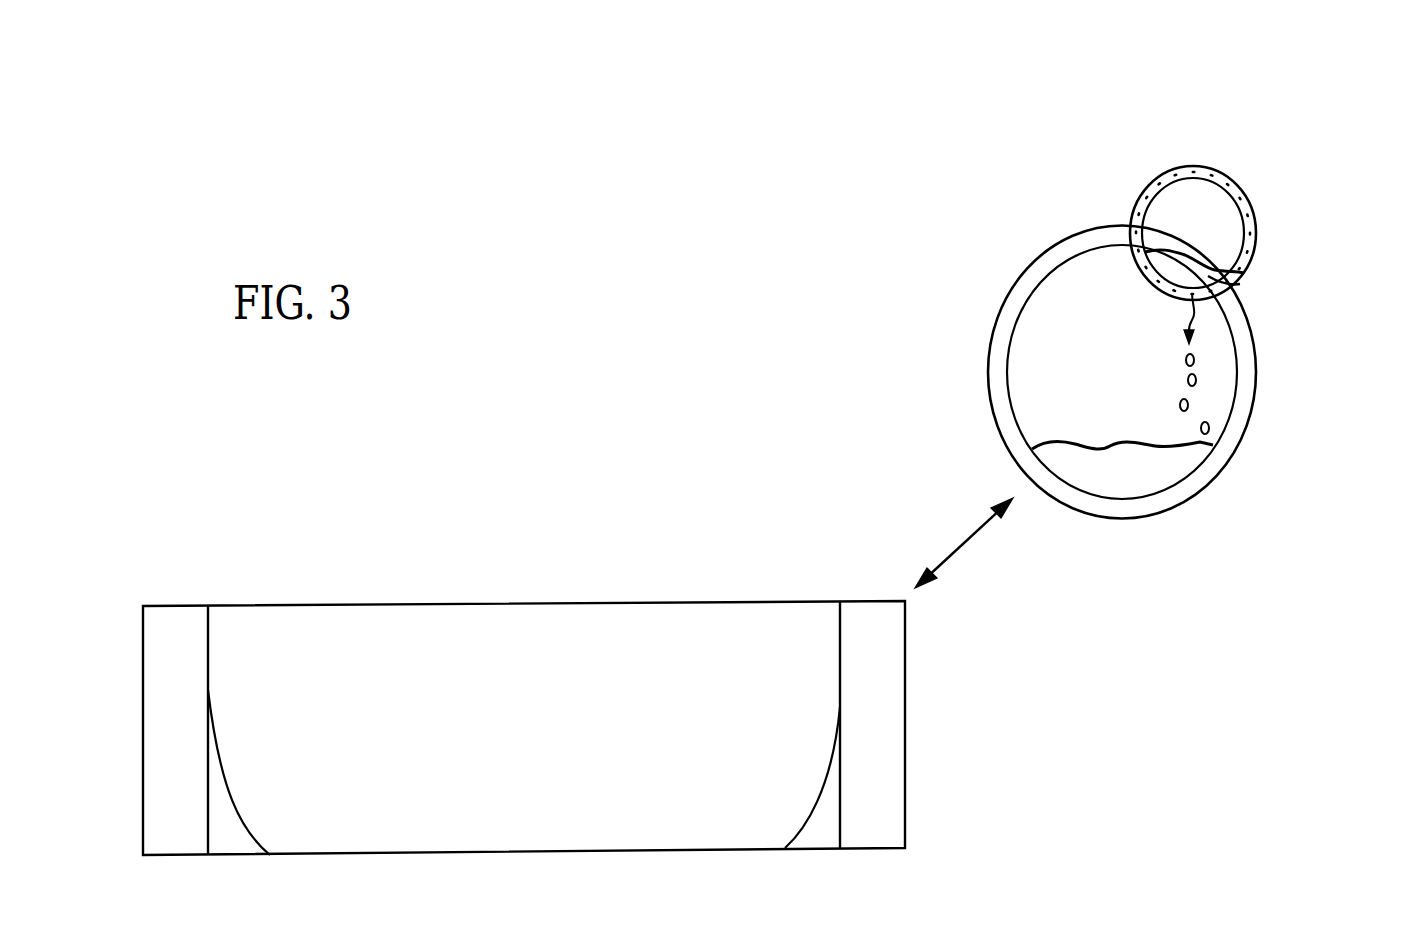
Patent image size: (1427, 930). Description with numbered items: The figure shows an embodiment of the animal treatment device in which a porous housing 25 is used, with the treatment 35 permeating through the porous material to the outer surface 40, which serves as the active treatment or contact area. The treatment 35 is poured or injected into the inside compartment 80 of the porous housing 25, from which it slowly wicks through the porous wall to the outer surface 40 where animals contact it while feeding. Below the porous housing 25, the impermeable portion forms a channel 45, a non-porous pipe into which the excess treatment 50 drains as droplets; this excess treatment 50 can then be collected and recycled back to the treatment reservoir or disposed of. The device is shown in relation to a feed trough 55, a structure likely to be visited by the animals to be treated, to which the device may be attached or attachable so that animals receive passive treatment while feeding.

The porous housing 25 is at (1140, 182).
The outer surface 40 is at (1220, 178).
The inside compartment 80 is at (1210, 222).
The treatment 35 is at (1213, 270).
The channel 45 is at (1047, 345).
The excess treatment 50 is at (1197, 386).
The feed trough 55 is at (524, 728).